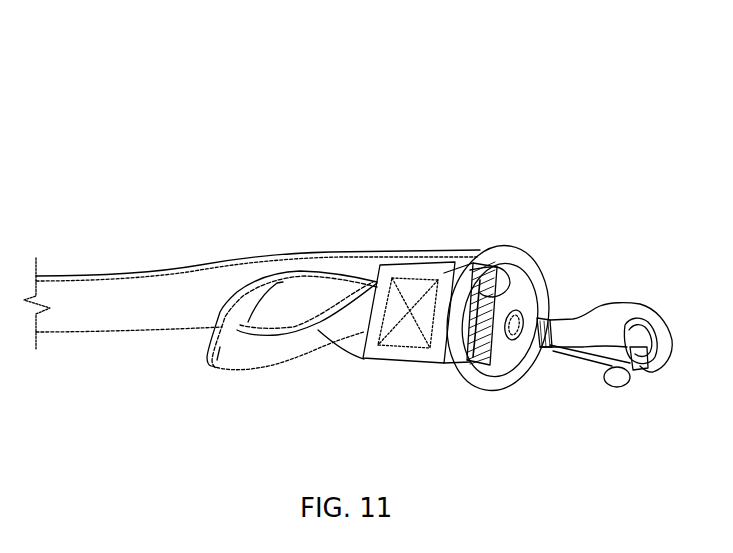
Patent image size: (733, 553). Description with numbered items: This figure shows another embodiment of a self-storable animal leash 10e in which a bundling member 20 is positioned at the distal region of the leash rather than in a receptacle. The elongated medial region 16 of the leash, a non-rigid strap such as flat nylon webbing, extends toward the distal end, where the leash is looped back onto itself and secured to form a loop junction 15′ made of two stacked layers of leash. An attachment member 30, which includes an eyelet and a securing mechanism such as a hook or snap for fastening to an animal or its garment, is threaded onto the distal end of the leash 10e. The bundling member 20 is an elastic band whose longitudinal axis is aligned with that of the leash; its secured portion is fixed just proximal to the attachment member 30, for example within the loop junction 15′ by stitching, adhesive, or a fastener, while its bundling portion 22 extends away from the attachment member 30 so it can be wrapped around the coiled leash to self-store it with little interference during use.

The self-storable leash 10e is at (156, 71).
The loop junction 15′ is at (402, 271).
The elongated medial region 16 is at (70, 282).
The bundling member 20 is at (195, 386).
The bundling portion 22 is at (273, 368).
The attachment member 30 is at (653, 282).